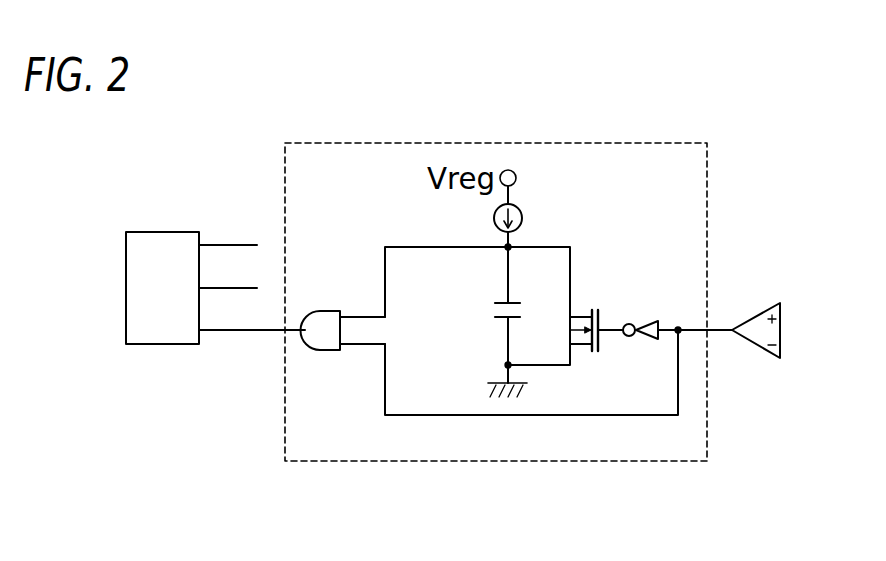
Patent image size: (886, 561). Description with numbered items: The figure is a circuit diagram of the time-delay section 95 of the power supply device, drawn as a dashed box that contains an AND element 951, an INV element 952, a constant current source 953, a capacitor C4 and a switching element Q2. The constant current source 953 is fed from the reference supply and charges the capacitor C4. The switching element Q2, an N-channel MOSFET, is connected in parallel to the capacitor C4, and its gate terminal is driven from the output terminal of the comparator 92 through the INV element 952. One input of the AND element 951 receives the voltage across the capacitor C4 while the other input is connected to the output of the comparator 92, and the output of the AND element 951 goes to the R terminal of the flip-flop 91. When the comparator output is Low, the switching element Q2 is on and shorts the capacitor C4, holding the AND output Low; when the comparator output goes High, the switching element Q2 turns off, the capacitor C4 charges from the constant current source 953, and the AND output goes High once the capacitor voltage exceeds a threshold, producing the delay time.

The flip-flop 91 is at (140, 304).
The comparator 92 is at (757, 320).
The time-delay section 95 is at (617, 462).
The AND element 951 is at (330, 315).
The INV element 952 is at (648, 322).
The constant current source 953 is at (524, 216).
The capacitor C4 is at (489, 307).
The switching element Q2 is at (576, 330).